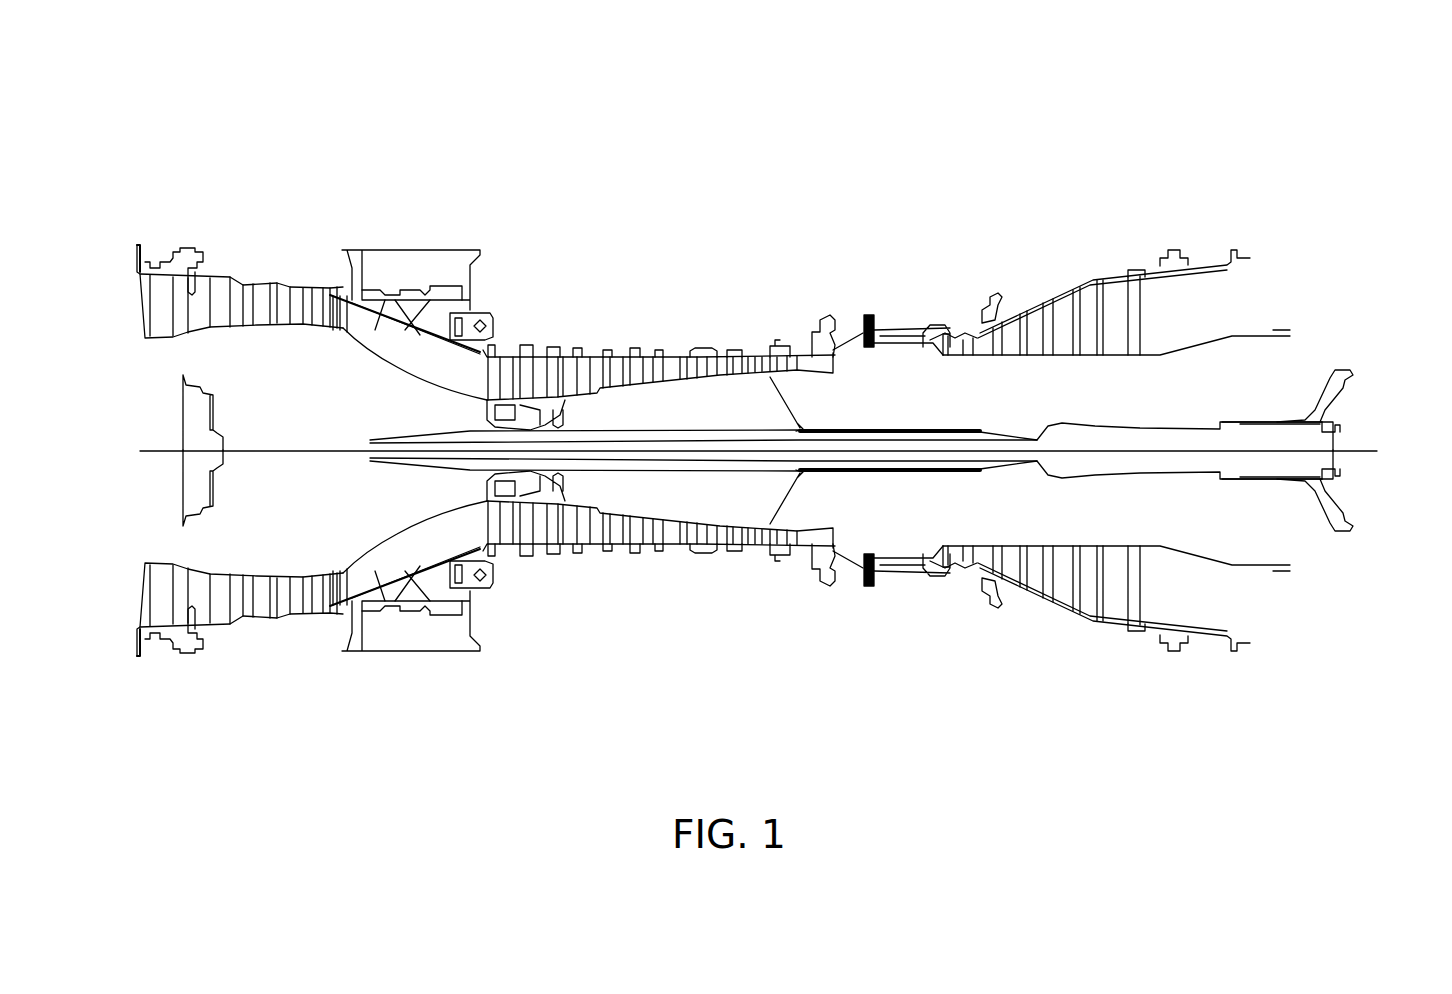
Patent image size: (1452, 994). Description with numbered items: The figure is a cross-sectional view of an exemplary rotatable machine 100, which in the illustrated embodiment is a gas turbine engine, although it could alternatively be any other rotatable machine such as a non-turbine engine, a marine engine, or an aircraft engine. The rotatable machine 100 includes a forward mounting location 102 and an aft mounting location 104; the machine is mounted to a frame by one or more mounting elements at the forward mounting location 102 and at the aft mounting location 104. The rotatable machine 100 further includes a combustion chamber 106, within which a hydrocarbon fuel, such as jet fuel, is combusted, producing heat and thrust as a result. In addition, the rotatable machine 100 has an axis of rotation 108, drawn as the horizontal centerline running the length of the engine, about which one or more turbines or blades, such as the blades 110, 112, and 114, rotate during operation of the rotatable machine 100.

The rotatable machine 100 is at (791, 352).
The forward mounting location 102 is at (563, 448).
The aft mounting location 104 is at (1272, 452).
The combustion chamber 106 is at (905, 350).
The axis of rotation 108 is at (1362, 450).
The blades 110 is at (283, 288).
The blades 112 is at (723, 354).
The blades 114 is at (1108, 272).